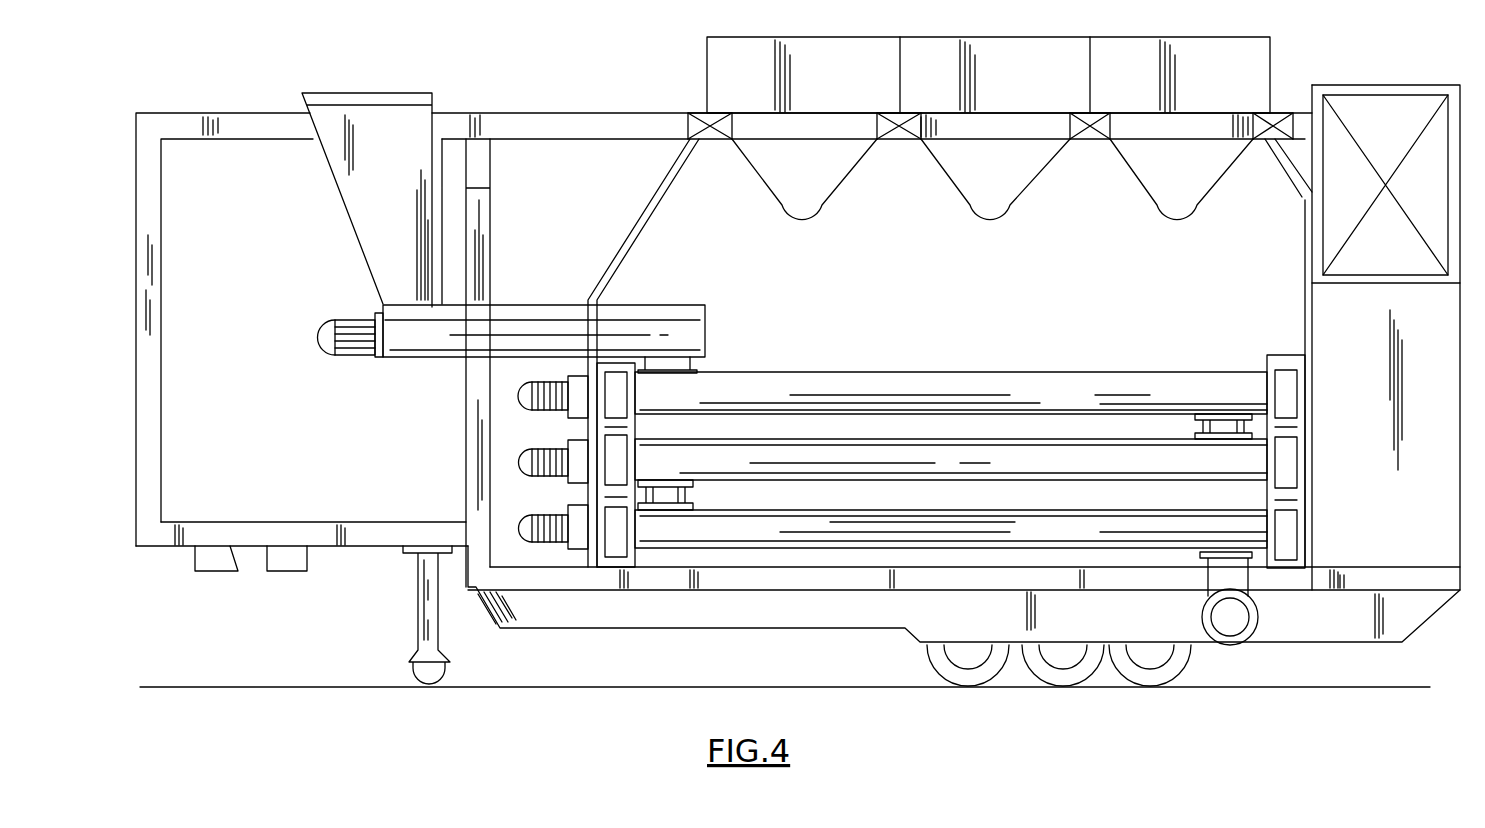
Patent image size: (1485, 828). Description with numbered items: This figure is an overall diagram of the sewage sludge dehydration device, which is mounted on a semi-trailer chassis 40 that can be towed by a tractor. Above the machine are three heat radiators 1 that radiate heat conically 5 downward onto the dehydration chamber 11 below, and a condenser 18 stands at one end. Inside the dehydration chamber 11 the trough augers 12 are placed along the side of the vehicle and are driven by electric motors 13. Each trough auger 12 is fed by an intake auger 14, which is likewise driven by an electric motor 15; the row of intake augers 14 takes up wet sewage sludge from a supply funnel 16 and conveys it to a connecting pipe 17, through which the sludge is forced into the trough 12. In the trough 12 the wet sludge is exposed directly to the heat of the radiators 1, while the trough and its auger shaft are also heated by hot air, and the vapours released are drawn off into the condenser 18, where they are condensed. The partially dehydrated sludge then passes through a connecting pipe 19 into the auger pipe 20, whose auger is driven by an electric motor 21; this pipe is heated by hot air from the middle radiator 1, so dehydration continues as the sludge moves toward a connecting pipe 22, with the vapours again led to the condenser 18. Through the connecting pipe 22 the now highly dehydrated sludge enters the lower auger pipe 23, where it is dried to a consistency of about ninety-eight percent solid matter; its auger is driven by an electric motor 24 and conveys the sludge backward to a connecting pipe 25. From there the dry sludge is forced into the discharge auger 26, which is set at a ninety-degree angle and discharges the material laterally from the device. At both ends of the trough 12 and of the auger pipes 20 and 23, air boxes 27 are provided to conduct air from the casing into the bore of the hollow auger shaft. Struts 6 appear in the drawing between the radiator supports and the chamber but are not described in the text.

The heat radiator 1 is at (988, 102).
The conical heat radiation 5 is at (840, 195).
The support strut 6 is at (655, 208).
The dehydration chamber 11 is at (798, 386).
The trough auger 12 is at (951, 393).
The electric motor 13 is at (518, 392).
The intake auger 14 is at (415, 352).
The electric motor 15 is at (330, 338).
The supply funnel 16 is at (350, 185).
The connecting pipe 17 is at (695, 355).
The condenser 18 is at (1380, 110).
The connecting pipe 19 is at (1232, 438).
The auger pipe 20 is at (951, 459).
The electric motor 21 is at (518, 462).
The connecting pipe 22 is at (680, 505).
The auger pipe 23 is at (951, 529).
The electric motor 24 is at (518, 528).
The connecting pipe 25 is at (1225, 560).
The discharge auger 26 is at (1236, 622).
The air box 27 is at (1292, 464).
The semi-trailer chassis 40 is at (873, 630).